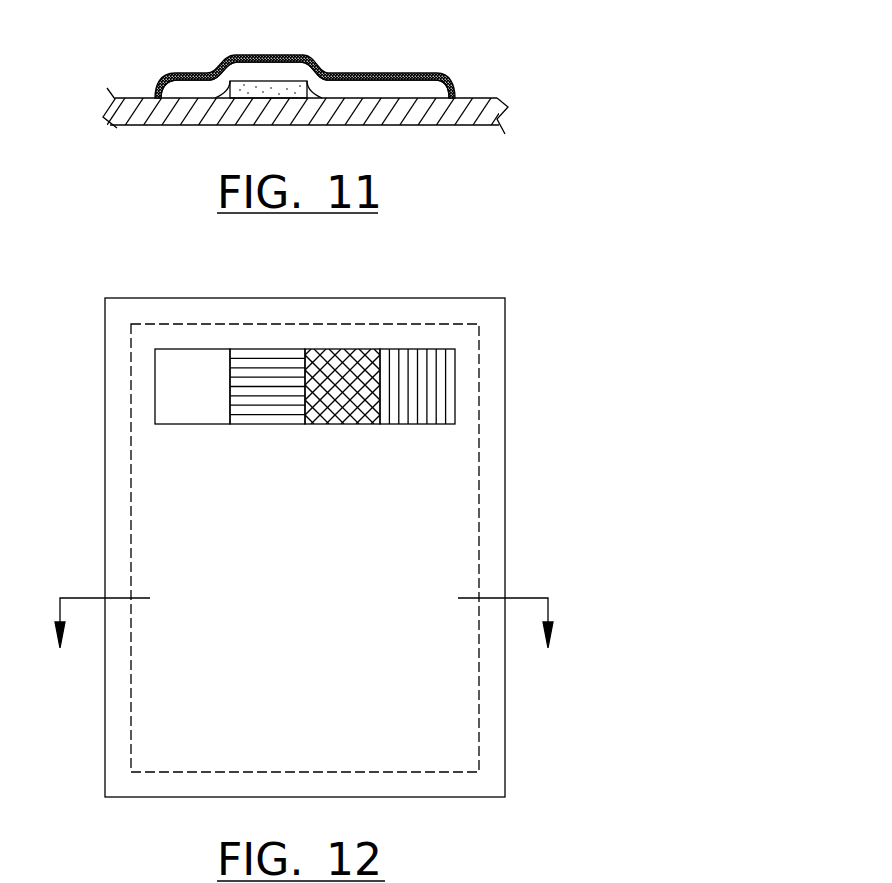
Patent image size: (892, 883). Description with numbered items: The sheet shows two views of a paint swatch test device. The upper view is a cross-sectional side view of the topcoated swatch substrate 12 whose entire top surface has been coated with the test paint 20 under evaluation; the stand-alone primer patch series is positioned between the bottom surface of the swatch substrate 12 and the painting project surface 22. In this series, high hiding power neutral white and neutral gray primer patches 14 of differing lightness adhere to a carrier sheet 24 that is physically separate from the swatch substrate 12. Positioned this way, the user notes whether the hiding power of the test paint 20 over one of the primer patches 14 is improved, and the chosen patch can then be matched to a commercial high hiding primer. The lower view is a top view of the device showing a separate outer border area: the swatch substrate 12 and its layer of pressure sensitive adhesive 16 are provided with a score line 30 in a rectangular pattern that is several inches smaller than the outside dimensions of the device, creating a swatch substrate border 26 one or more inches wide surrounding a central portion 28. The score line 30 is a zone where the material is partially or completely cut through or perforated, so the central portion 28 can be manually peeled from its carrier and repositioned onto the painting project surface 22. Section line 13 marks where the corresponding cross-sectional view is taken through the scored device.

In FIG. 11, the swatch substrate 12 is at (407, 88).
In FIG. 12, the section line 13- 13 is at (325, 645).
In FIG. 11, the primer patch 14 is at (275, 82).
In FIG. 12, the primer patch 14 is at (202, 372).
In FIG. 12, the pressure sensitive adhesive layer 16 is at (532, 882).
In FIG. 11, the test paint 20 is at (323, 80).
In FIG. 11, the painting project surface 22 is at (468, 110).
In FIG. 11, the carrier sheet 24 is at (247, 93).
In FIG. 12, the swatch substrate border 26 is at (492, 468).
In FIG. 12, the central portion 28 is at (442, 538).
In FIG. 12, the score line 30 is at (478, 558).